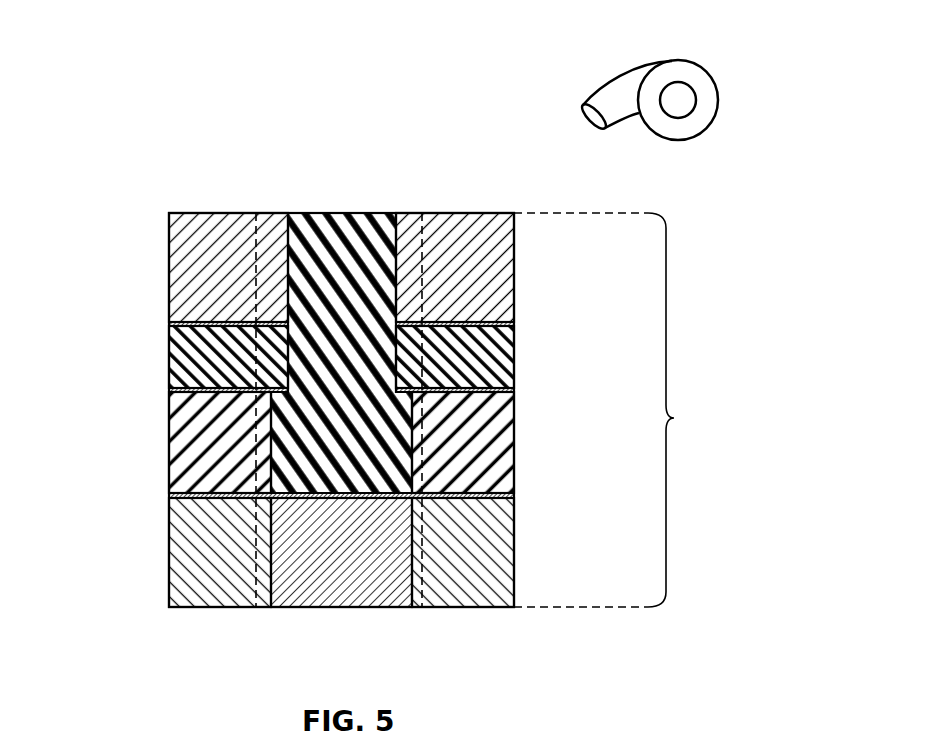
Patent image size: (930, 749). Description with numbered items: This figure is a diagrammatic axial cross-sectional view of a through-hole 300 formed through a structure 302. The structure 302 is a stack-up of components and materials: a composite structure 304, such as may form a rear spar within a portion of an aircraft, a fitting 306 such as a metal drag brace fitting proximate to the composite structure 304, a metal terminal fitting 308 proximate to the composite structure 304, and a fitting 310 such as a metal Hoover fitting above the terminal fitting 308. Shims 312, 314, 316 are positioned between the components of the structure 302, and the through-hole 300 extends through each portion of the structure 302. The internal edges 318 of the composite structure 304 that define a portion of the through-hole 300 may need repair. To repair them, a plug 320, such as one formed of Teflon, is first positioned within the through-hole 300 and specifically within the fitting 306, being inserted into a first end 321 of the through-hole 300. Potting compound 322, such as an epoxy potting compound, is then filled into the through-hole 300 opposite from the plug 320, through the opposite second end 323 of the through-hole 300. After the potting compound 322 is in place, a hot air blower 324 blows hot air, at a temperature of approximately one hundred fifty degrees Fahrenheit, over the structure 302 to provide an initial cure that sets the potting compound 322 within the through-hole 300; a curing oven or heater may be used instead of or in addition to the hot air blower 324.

The through-hole 300 is at (395, 213).
The structure 302 is at (674, 418).
The composite structure 304 is at (514, 445).
The fitting 306 is at (514, 550).
The metal terminal fitting 308 is at (514, 362).
The fitting 310 is at (514, 265).
The shim 312 is at (169, 494).
The shim 314 is at (169, 388).
The shim 316 is at (169, 322).
The internal edges 318 is at (262, 453).
The plug 320 is at (295, 596).
The first end 321 is at (389, 607).
The potting compound 322 is at (310, 213).
The second end 323 is at (355, 213).
The hot air blower 324 is at (623, 70).